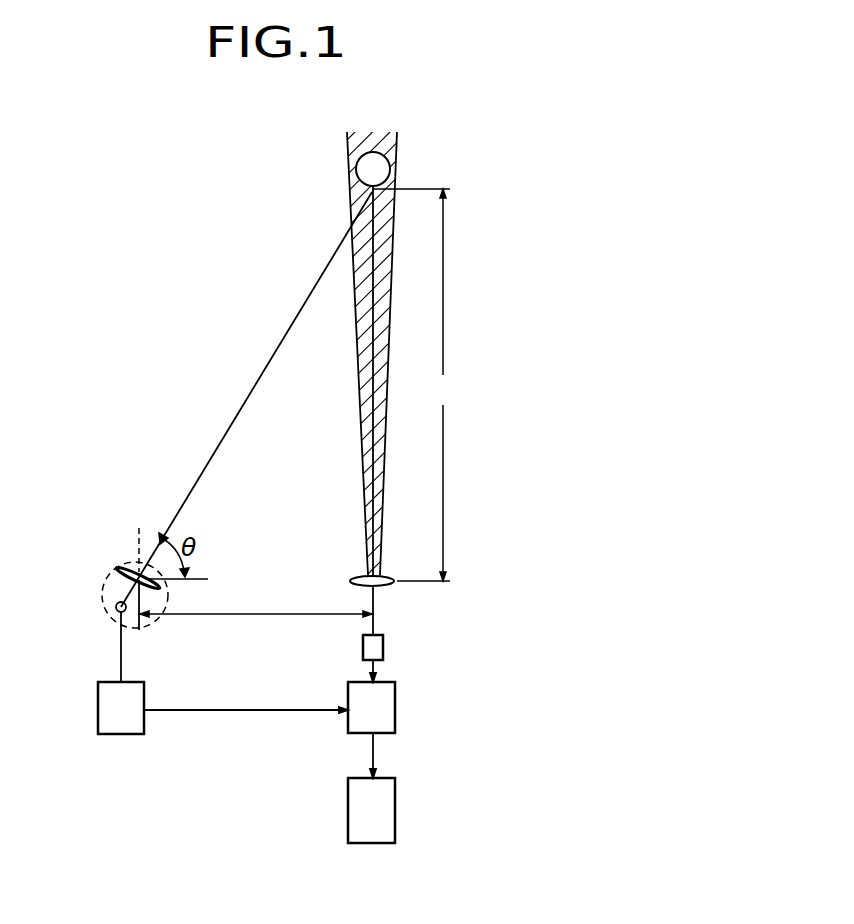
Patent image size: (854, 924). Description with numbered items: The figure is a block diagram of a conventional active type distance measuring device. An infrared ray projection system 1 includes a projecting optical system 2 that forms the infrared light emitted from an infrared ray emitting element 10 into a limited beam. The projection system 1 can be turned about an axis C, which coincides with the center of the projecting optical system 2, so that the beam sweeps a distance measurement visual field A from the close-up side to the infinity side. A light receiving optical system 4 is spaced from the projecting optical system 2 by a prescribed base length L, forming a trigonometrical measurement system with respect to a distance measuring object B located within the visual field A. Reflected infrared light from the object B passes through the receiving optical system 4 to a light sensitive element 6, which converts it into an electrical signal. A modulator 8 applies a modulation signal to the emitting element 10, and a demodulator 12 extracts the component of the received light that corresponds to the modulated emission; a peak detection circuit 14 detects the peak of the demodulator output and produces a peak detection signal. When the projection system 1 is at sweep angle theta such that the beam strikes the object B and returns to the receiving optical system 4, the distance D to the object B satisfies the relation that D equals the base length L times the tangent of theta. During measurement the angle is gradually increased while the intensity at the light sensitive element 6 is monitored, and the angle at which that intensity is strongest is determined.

The infrared ray projection system 1 is at (103, 590).
The projecting optical system 2 is at (125, 566).
The light receiving optical system 4 is at (386, 586).
The light sensitive element 6 is at (384, 652).
The modulator 8 is at (120, 728).
The infrared ray emitting element 10 is at (114, 611).
The demodulator 12 is at (396, 708).
The peak detection circuit 14 is at (390, 825).
The distance measurement visual field A is at (390, 244).
The distance measuring object B is at (409, 153).
The axis C is at (140, 565).
The distance to the object D is at (411, 385).
The base length L is at (256, 600).